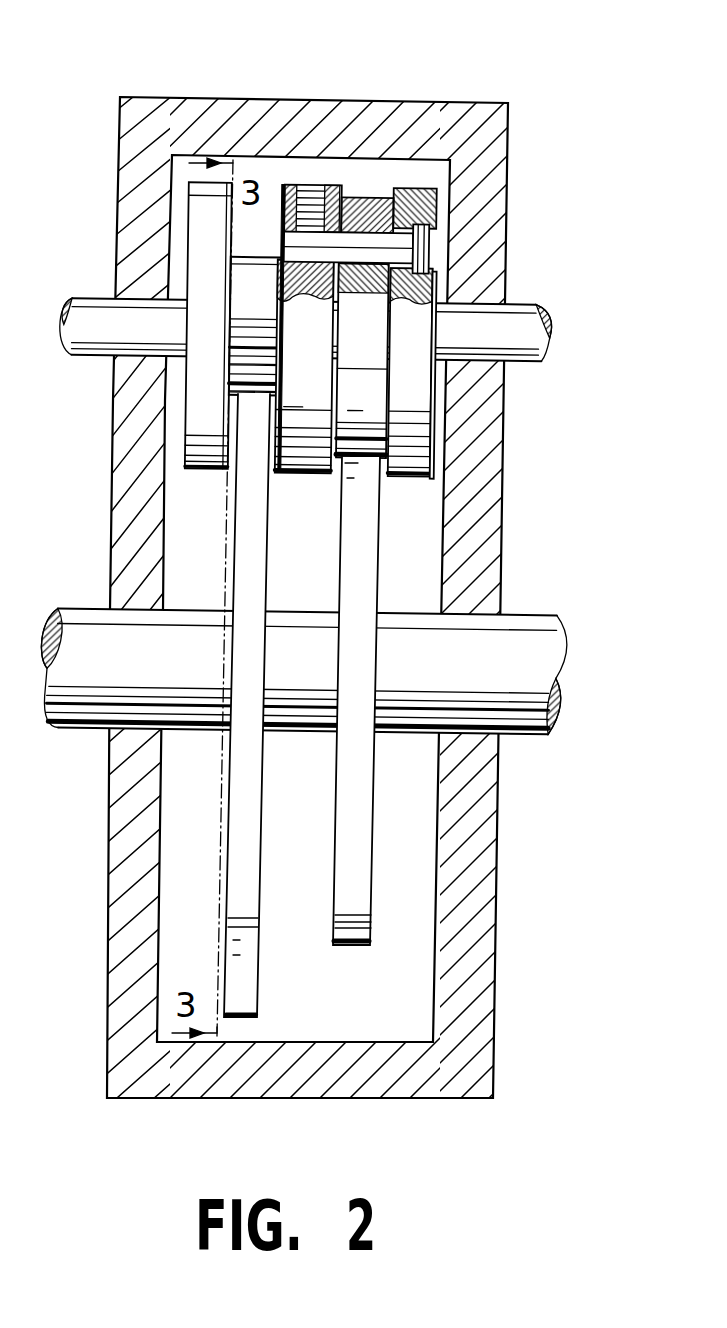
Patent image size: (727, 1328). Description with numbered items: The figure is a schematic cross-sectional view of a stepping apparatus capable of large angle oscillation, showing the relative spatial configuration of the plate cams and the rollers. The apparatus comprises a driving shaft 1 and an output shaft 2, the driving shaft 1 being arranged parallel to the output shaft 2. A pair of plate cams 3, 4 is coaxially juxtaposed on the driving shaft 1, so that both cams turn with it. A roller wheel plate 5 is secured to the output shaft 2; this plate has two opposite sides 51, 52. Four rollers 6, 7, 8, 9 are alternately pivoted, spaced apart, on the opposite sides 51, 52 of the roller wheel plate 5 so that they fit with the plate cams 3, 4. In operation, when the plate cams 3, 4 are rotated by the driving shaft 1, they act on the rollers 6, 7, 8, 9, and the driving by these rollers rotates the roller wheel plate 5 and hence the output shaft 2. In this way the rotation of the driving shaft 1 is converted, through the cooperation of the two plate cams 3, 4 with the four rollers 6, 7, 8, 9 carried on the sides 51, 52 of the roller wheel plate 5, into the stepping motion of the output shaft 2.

The driving shaft 1 is at (524, 634).
The output shaft 2 is at (516, 312).
The plate cam 3 is at (364, 831).
The plate cam 4 is at (237, 856).
The roller wheel plate 5 is at (182, 446).
The side of roller wheel plate 51 is at (271, 195).
The side of roller wheel plate 52 is at (351, 193).
The roller 6 is at (228, 373).
The roller 7 is at (376, 387).
The roller 8 is at (241, 290).
The roller 9 is at (366, 208).